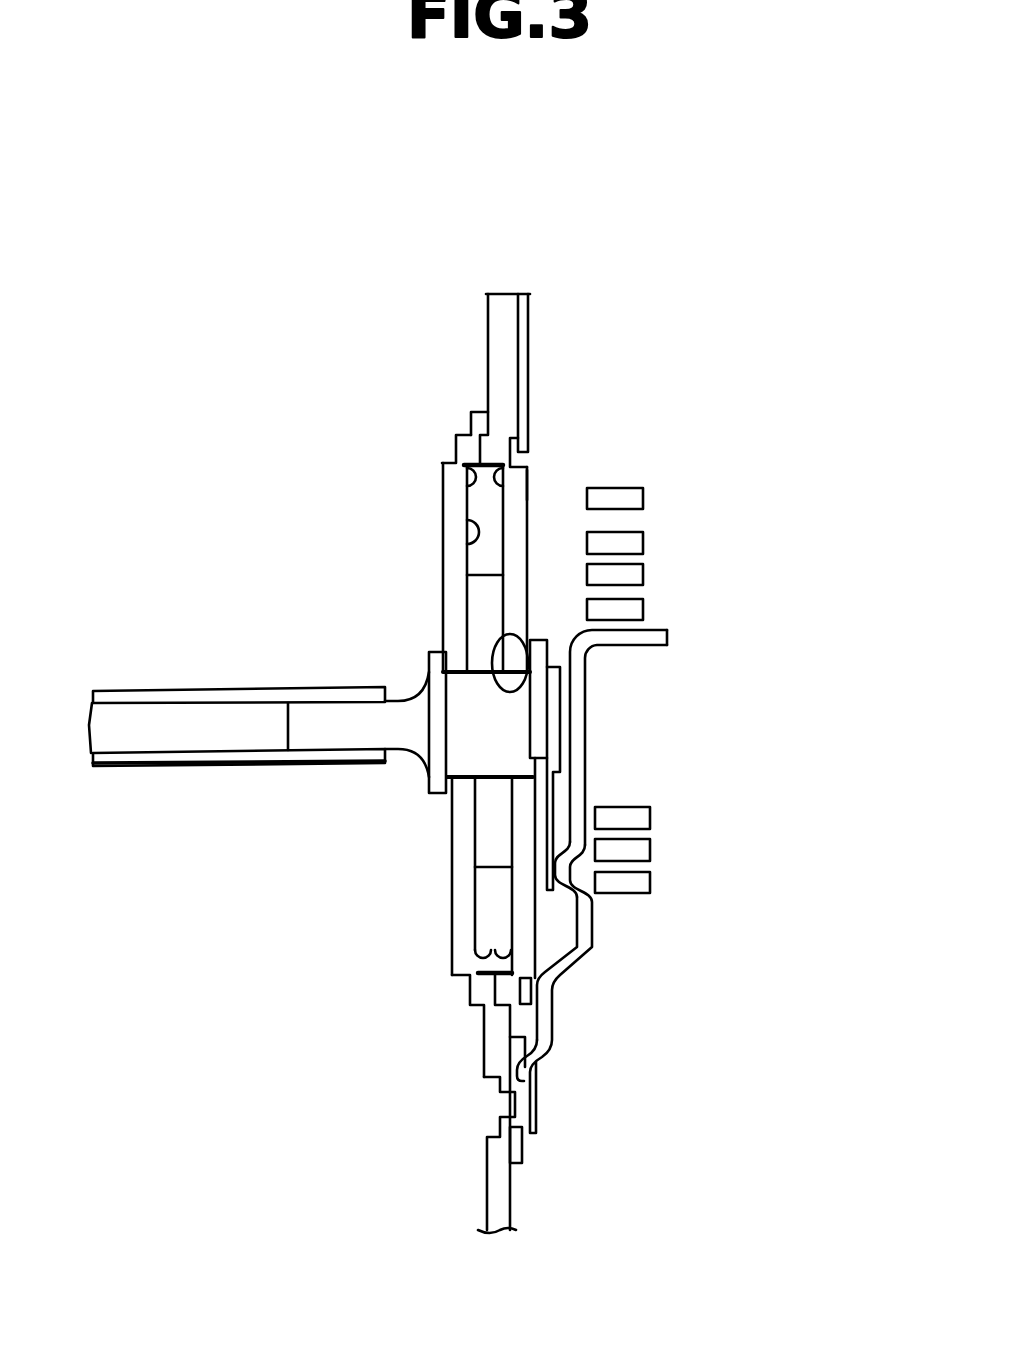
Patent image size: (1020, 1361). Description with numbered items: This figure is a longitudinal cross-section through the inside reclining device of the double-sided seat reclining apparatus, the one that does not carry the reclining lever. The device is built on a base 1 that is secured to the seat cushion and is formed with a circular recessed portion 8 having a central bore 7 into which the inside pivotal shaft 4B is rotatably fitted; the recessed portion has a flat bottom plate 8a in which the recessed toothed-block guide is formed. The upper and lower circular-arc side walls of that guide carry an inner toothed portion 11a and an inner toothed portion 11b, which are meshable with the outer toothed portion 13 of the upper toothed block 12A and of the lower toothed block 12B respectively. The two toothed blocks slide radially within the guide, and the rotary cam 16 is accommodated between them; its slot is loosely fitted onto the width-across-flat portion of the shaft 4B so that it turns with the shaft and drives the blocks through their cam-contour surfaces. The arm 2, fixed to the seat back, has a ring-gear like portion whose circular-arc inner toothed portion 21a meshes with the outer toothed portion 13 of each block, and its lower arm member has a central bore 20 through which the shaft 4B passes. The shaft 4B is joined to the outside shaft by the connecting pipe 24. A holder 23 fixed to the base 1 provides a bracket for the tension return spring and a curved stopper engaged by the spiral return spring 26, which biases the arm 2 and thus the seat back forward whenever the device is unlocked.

The base 1 is at (485, 1055).
The arm 2 is at (527, 507).
The inside pivotal shaft 4B is at (333, 732).
The central bore 7 is at (461, 672).
The circular recessed portion 8 is at (480, 543).
The flat bottom plate 8a is at (463, 915).
The inner toothed portion 11a is at (465, 489).
The inner toothed portion 11b is at (476, 952).
The upper toothed block 12A is at (495, 545).
The lower toothed block 12B is at (490, 897).
The outer toothed portion 13 is at (481, 463).
The rotary cam 16 is at (490, 813).
The central bore 20 is at (520, 634).
The inner toothed portion 21a is at (527, 483).
The holder 23 is at (567, 977).
The connecting pipe 24 is at (157, 770).
The return spring 26 is at (644, 498).